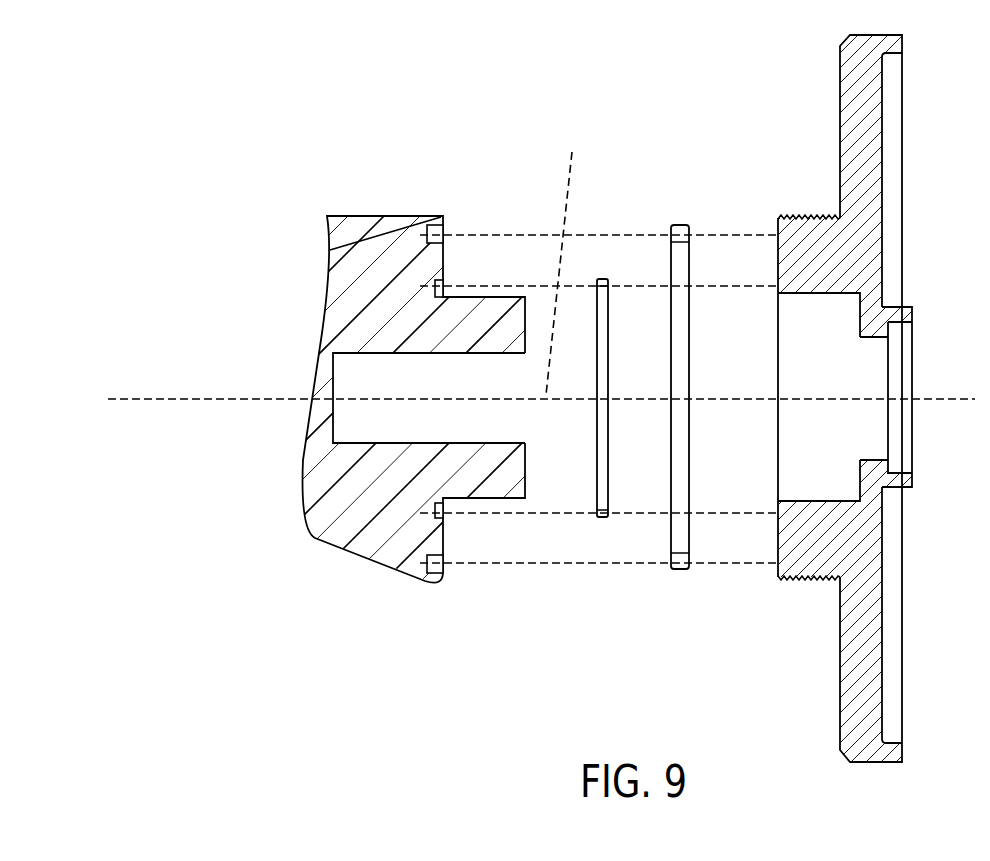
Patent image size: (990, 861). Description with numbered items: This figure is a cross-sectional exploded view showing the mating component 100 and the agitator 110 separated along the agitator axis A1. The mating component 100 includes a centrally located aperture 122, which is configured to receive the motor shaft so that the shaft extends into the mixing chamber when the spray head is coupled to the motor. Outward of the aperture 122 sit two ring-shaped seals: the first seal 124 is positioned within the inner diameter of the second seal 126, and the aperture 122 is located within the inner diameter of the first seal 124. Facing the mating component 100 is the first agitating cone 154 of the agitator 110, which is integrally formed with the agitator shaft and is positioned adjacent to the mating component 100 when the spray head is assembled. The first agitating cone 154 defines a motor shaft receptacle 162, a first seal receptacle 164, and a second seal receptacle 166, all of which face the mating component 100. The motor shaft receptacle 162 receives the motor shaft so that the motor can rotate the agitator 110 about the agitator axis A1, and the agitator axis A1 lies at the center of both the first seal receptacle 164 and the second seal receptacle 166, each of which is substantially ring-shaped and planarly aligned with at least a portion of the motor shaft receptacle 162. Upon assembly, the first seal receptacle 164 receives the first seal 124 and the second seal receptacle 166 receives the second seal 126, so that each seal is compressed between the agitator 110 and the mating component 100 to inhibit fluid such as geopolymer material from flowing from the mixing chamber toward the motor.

The mating component 100 is at (860, 673).
The agitator 110 is at (331, 543).
The aperture 122 is at (874, 365).
The first seal 124 is at (601, 277).
The second seal 126 is at (680, 224).
The first agitating cone 154 is at (324, 451).
The motor shaft receptacle 162 is at (397, 381).
The first seal receptacle 164 is at (430, 276).
The second seal receptacle 166 is at (436, 212).
The agitator axis A1 is at (564, 259).